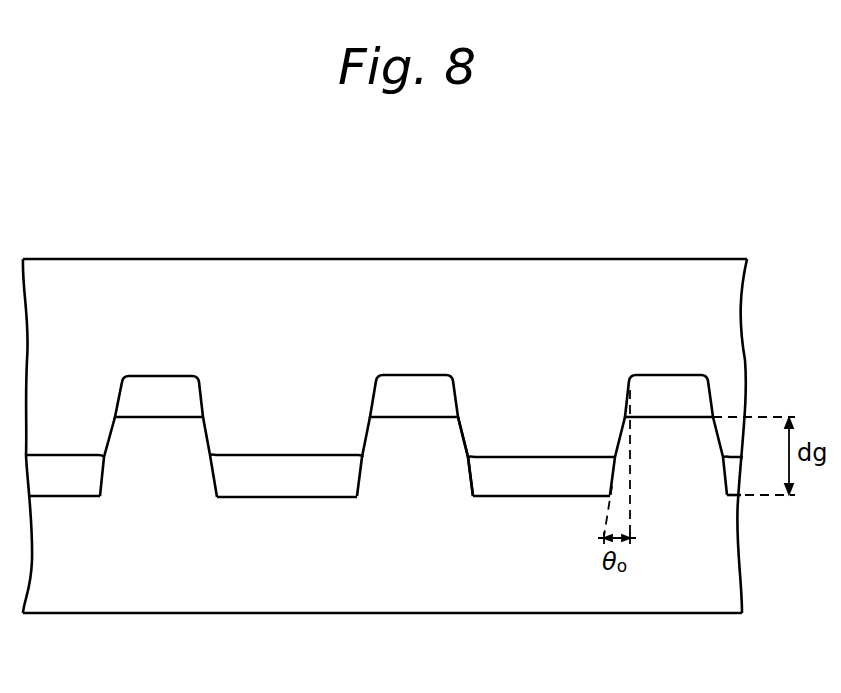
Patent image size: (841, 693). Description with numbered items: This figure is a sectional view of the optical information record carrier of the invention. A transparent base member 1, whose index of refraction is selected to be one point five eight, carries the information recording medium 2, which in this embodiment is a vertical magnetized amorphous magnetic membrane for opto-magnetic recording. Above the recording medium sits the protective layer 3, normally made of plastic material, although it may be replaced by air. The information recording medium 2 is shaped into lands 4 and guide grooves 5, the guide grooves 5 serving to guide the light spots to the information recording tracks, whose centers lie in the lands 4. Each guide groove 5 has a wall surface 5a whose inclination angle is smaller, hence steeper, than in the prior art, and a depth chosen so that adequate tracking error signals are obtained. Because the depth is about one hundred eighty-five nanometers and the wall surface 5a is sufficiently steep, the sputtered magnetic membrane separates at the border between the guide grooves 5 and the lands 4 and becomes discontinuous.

The transparent base member 1 is at (725, 583).
The information recording medium 2 is at (420, 393).
The protective layer 3 is at (612, 275).
The land 4 is at (553, 496).
The guide groove 5 is at (427, 418).
The wall surface 5a is at (462, 437).